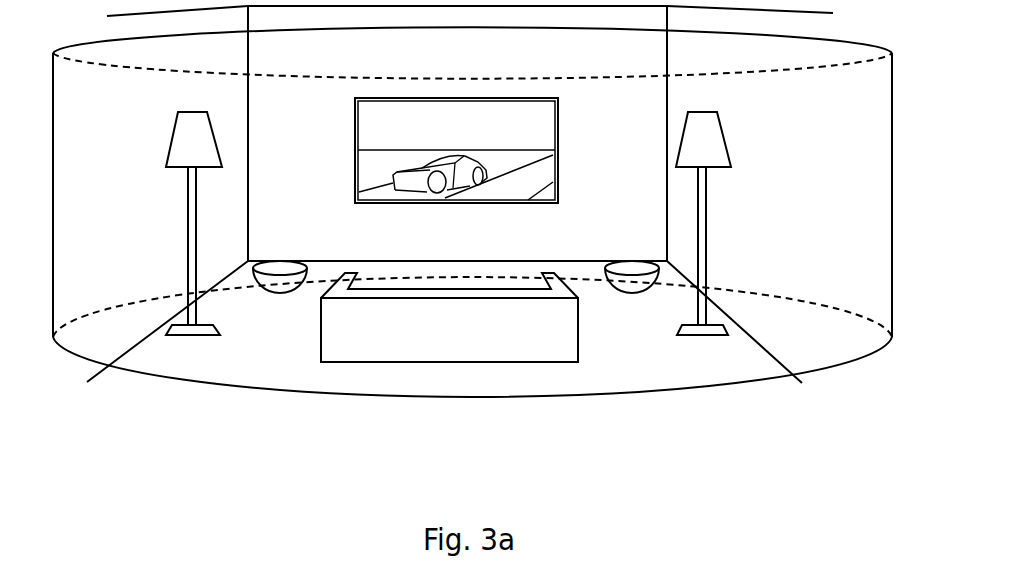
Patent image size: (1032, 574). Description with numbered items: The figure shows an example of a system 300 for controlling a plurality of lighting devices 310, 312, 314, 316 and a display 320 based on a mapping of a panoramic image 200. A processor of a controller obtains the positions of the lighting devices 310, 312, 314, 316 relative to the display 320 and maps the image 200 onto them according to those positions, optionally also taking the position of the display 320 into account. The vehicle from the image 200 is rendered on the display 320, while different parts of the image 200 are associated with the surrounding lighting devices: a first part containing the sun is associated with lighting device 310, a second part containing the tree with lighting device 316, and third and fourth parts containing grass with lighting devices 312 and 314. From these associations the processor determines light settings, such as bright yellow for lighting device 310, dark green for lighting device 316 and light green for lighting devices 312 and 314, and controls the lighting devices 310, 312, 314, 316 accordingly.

The image 200 is at (823, 357).
The system 300 is at (477, 472).
The lighting device 310 is at (193, 144).
The lighting device 312 is at (285, 268).
The lighting device 314 is at (628, 268).
The lighting device 316 is at (708, 145).
The display 320 is at (533, 123).